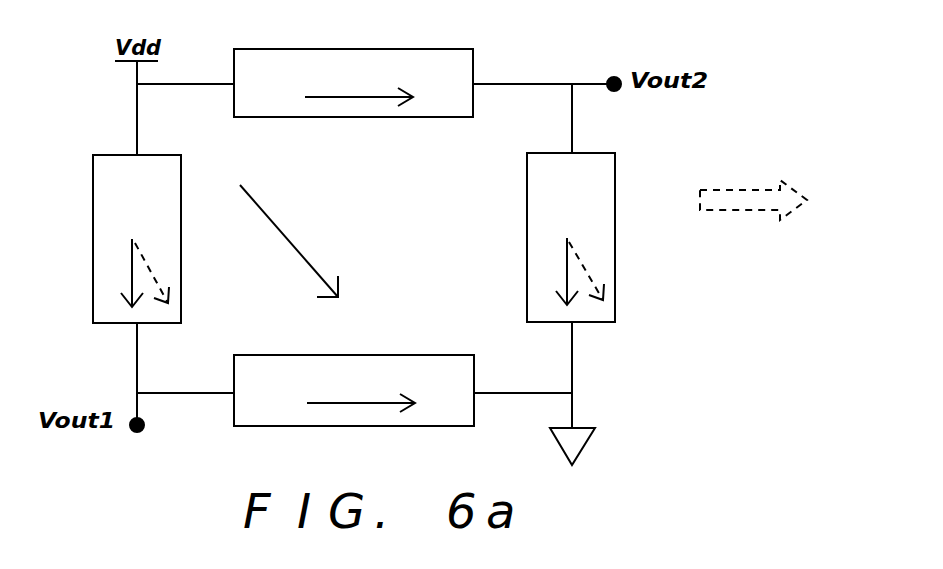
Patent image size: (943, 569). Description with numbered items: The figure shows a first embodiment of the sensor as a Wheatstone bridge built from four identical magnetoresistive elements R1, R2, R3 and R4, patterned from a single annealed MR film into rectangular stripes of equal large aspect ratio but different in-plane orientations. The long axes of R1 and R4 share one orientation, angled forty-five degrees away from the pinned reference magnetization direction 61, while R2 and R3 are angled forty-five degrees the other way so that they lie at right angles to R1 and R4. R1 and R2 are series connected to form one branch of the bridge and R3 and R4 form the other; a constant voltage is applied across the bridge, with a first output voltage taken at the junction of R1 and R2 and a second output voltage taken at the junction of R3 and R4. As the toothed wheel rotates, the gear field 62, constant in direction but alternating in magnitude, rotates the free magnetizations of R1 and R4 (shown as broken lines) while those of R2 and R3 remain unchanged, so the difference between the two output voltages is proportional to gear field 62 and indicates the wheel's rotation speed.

The reference magnetization direction 61 is at (285, 237).
The gear field 62 is at (738, 190).
The MR element R1 is at (137, 239).
The MR element R2 is at (354, 390).
The MR element R3 is at (353, 83).
The MR element R4 is at (571, 237).